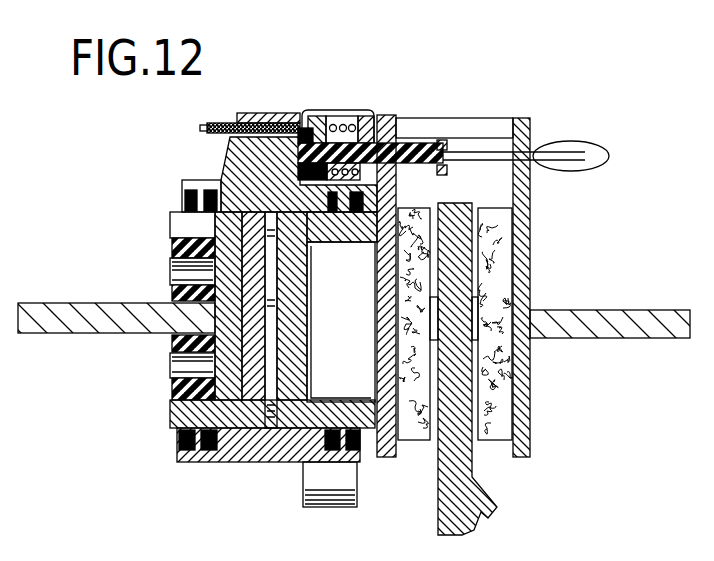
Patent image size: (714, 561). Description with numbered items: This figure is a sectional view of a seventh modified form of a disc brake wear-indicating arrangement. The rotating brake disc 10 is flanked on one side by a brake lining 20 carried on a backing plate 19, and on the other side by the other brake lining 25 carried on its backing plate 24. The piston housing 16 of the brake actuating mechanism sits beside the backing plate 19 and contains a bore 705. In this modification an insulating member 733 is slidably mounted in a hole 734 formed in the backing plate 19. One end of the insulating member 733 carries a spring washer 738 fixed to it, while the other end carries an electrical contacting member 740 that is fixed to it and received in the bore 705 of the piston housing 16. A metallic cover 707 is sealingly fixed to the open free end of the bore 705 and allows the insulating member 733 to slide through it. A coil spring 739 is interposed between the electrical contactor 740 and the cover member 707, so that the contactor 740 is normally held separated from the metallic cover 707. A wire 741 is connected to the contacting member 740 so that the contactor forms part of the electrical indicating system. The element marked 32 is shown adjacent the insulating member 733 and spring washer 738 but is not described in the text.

The disc 10 is at (462, 248).
The piston housing 16 is at (226, 178).
The backing plate 19 is at (381, 458).
The brake lining 20 is at (414, 440).
The backing plate 24 is at (523, 422).
The brake lining 25 is at (492, 440).
The bolt 32 is at (508, 168).
The bore 705 is at (320, 118).
The metallic cover 707 is at (359, 118).
The insulating member 733 is at (413, 163).
The hole 734 is at (437, 107).
The spring washer 738 is at (446, 141).
The coil spring 739 is at (343, 118).
The electrical contacting member 740 is at (321, 242).
The wire 741 is at (228, 124).